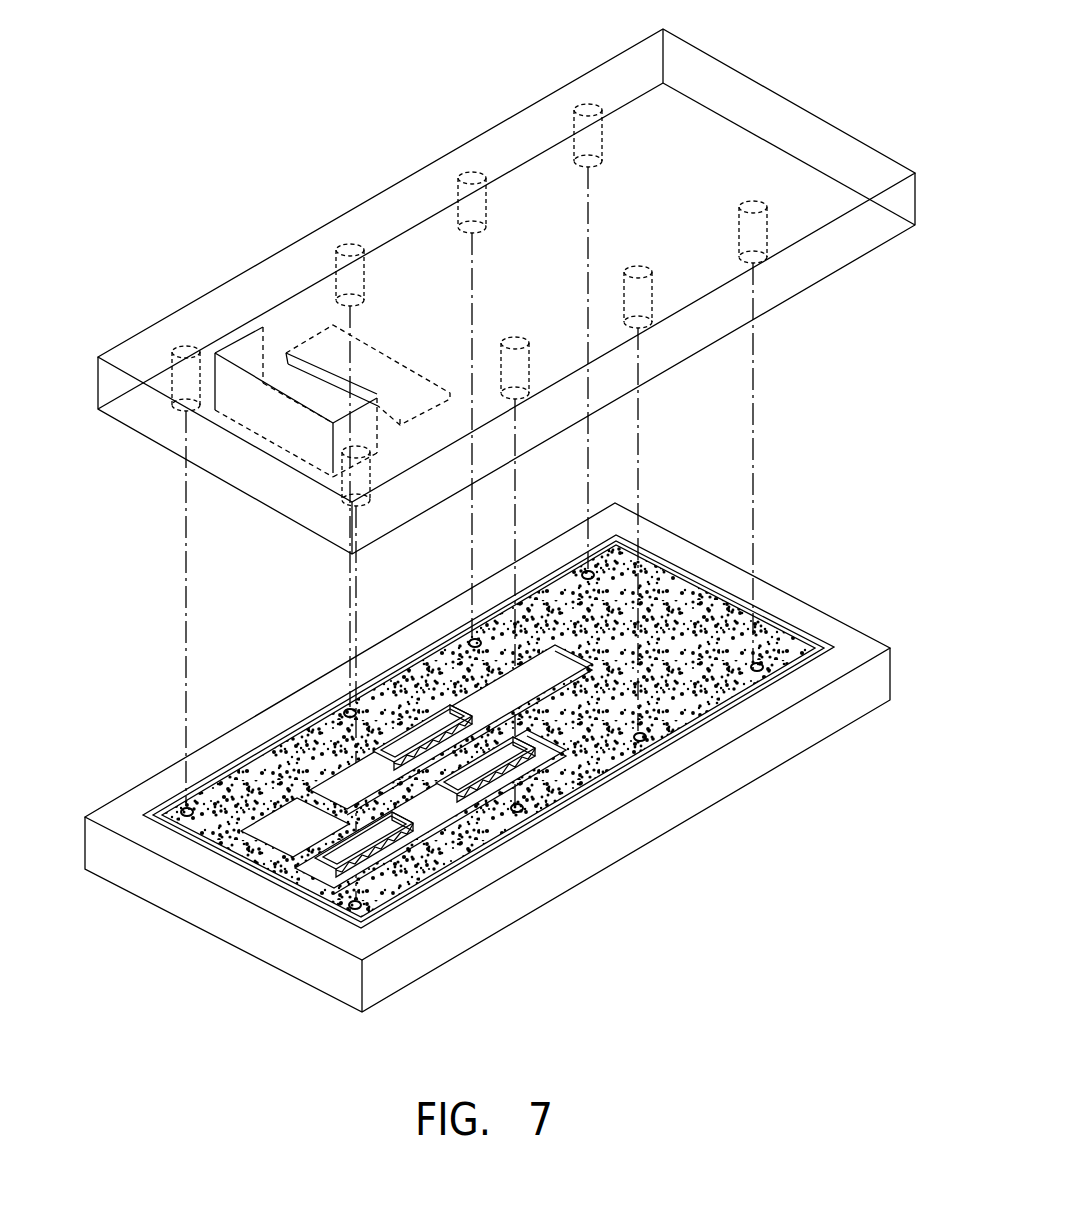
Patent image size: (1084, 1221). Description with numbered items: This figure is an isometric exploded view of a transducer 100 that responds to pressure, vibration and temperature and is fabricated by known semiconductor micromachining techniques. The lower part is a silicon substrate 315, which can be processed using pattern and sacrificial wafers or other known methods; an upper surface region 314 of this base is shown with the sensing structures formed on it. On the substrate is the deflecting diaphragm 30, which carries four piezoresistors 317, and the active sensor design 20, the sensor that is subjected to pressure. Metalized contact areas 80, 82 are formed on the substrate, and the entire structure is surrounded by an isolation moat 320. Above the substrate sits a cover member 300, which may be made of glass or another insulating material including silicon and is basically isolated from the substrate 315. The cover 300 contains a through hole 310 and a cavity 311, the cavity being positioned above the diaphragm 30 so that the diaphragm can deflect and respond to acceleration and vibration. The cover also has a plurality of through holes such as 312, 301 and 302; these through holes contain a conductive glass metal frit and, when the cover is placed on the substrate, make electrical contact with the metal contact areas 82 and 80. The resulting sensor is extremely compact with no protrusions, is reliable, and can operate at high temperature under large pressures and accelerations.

The cover member 300 is at (350, 122).
The through hole 301 is at (587, 106).
The through hole 302 is at (470, 173).
The through hole 312 is at (760, 202).
The cavity 311 is at (335, 343).
The through hole 310 is at (277, 372).
The deflecting diaphragm 30 is at (418, 702).
The rim of base 314 is at (800, 607).
The silicon substrate 315 is at (822, 715).
The isolation moat 320 is at (167, 805).
The metalized contact area 82 is at (237, 863).
The metalized contact area 80 is at (340, 913).
The active sensor design 20 is at (410, 872).
The piezoresistors 317 is at (490, 790).
The transducer 100 is at (477, 770).